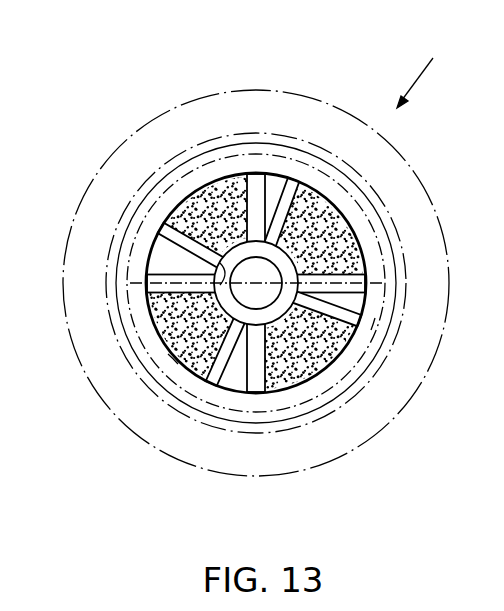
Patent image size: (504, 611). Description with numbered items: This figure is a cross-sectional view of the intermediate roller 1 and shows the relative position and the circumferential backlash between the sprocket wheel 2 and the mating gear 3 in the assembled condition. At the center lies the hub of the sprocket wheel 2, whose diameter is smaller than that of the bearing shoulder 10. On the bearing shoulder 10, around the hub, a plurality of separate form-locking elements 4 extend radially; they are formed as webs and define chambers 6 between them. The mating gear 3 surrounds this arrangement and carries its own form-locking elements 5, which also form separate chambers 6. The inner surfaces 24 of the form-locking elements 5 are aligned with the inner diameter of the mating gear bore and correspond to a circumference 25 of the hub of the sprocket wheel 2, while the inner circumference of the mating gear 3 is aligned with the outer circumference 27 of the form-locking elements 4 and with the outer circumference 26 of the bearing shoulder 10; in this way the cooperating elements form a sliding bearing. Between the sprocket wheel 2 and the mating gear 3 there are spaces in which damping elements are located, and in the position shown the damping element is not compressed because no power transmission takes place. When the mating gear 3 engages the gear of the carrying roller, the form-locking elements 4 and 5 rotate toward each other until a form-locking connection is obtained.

The intermediate roller 1 is at (449, 53).
The sprocket wheel 2 is at (284, 92).
The mating gear 3 is at (404, 301).
The form-locking elements 4 is at (247, 176).
The form-locking elements 5 is at (161, 228).
The chambers 6 is at (296, 162).
The bearing shoulder 10 is at (190, 372).
The inner surfaces 24 is at (160, 328).
The circumference 25 is at (177, 356).
The outer circumference 26 is at (374, 326).
The outer circumference 27 is at (147, 293).